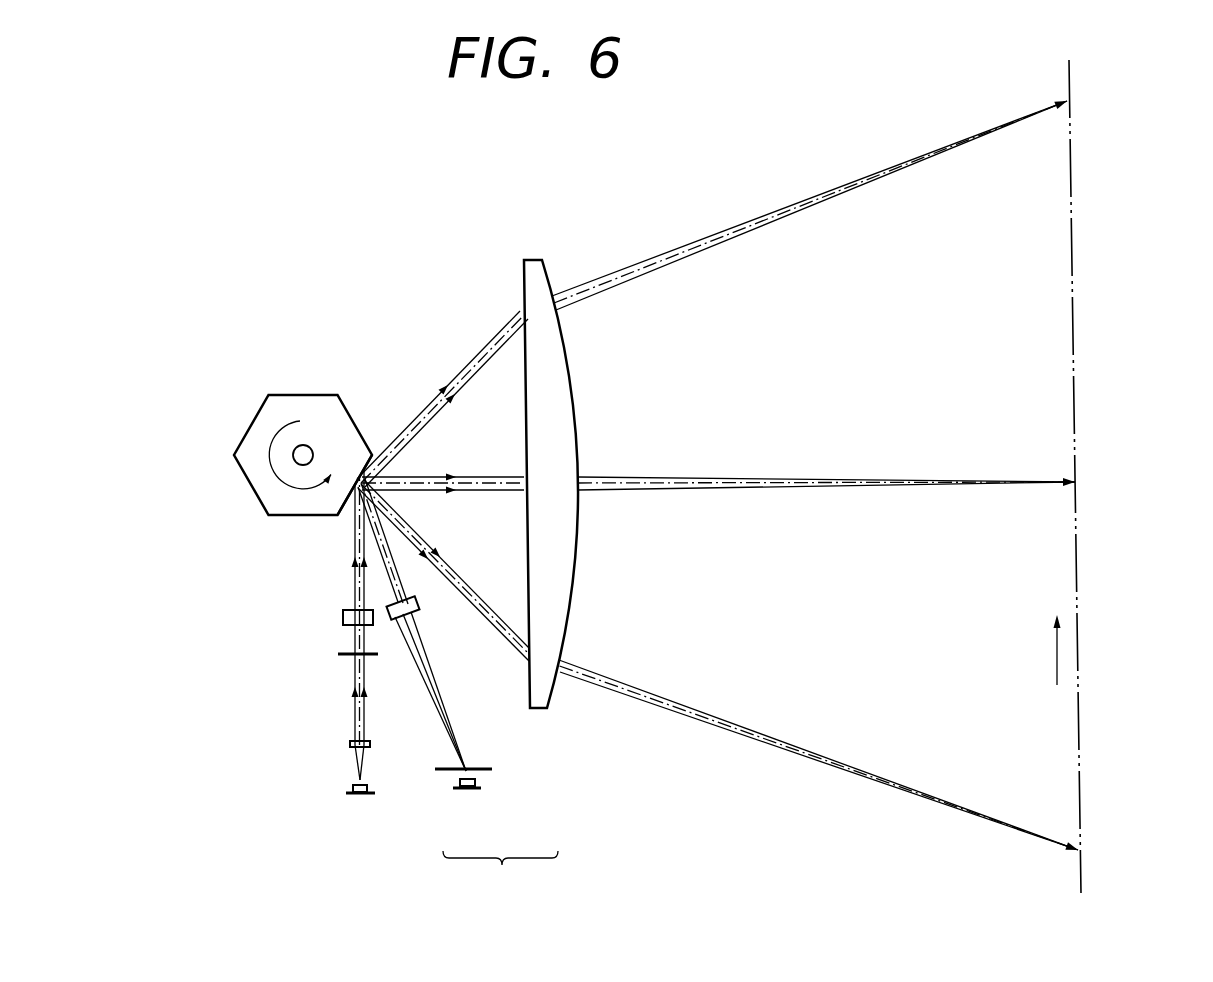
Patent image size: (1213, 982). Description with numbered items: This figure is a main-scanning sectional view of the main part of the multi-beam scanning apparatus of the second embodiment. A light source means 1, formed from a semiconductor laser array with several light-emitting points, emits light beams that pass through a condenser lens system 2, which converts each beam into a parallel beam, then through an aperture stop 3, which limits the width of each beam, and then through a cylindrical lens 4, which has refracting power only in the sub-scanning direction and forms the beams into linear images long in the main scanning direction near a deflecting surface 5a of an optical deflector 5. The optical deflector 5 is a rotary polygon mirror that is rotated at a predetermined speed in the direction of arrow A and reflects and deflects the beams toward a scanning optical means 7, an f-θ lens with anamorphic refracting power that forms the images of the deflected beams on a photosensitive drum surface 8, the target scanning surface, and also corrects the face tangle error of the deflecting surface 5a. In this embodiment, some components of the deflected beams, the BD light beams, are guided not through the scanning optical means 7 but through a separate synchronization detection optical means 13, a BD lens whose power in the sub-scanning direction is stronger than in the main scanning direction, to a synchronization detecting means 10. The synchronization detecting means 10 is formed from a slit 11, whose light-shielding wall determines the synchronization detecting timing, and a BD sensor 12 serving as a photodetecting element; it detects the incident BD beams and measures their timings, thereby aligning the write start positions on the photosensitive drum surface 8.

The light source means 1 is at (357, 795).
The condenser lens system 2 is at (350, 744).
The aperture stop 3 is at (343, 657).
The cylindrical lens 4 is at (343, 620).
The optical deflector 5 is at (305, 400).
The deflecting surface 5a is at (366, 462).
The scanning optical means 7 is at (532, 258).
The photosensitive drum surface 8 is at (1082, 566).
The synchronization detecting means 10 is at (500, 877).
The slit 11 is at (491, 772).
The BD sensor 12 is at (466, 790).
The synchronization detection optical means 13 is at (420, 612).